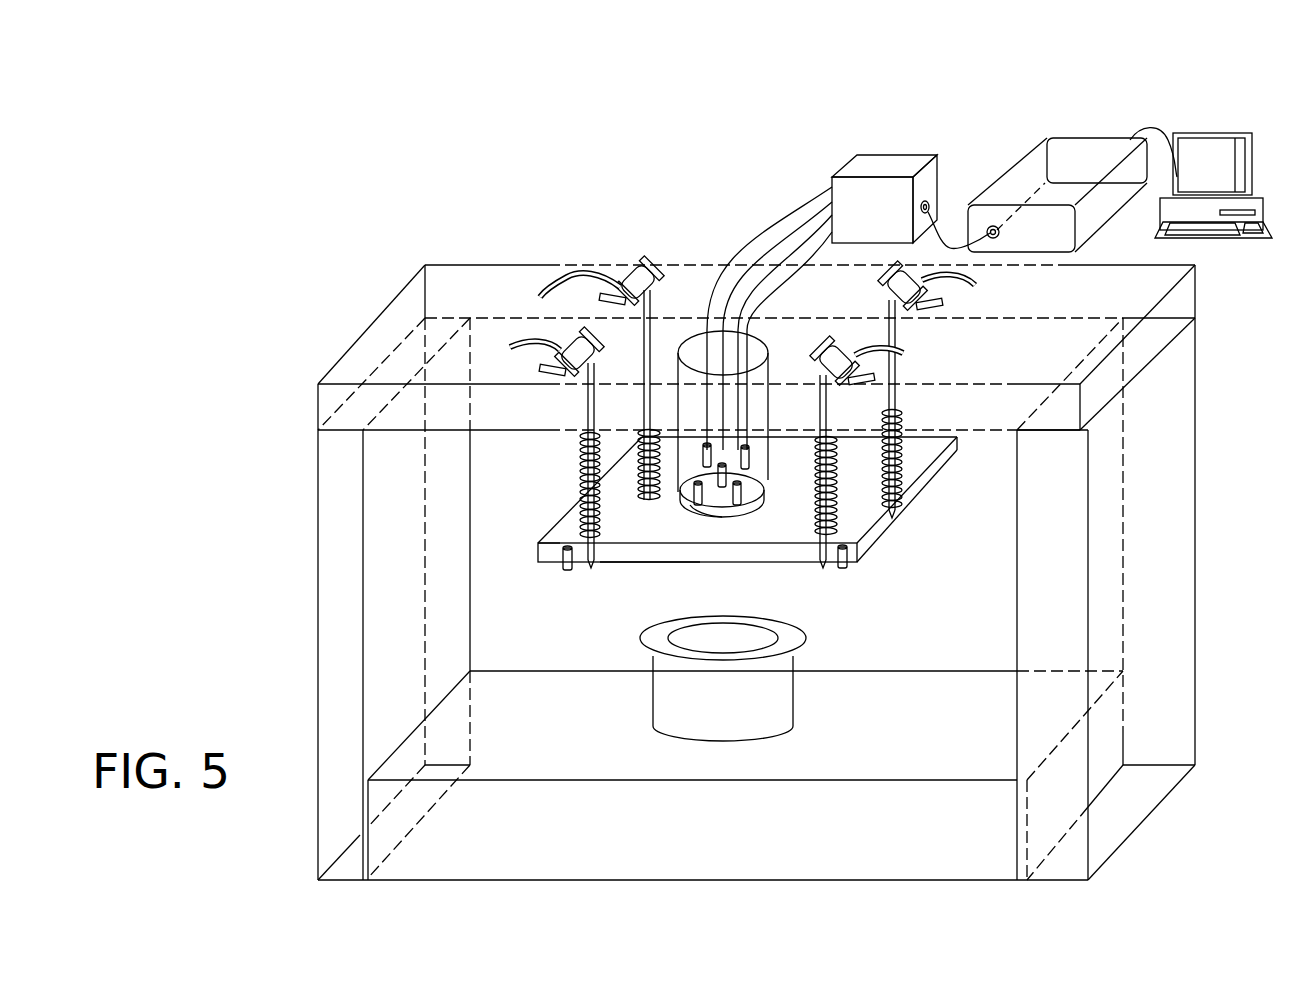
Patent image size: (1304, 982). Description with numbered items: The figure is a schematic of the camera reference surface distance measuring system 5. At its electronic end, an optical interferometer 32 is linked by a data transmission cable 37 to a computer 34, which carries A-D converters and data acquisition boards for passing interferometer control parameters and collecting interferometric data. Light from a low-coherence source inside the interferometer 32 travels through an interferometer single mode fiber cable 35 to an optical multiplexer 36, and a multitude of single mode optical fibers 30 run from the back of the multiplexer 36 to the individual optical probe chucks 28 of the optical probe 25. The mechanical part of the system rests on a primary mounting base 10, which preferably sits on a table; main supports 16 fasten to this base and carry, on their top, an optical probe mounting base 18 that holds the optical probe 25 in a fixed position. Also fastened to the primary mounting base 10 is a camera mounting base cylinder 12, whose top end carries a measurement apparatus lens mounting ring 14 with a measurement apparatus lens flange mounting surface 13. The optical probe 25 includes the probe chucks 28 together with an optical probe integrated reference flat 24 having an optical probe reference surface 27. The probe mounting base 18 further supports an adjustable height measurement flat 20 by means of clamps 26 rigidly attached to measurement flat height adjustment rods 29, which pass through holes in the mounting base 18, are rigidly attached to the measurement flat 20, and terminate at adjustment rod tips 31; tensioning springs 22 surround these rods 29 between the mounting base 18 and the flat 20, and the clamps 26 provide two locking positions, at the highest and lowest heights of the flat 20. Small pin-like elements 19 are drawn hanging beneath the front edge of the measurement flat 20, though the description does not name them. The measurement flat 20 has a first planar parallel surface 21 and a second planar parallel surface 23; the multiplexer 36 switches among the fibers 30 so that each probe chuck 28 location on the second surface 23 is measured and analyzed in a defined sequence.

The camera reference surface distance measuring system 5 is at (413, 192).
The primary mounting base 10 is at (920, 678).
The camera mounting base cylinder 12 is at (785, 715).
The measurement apparatus lens flange mounting surface 13 is at (803, 640).
The measurement apparatus lens mounting ring 14 is at (648, 642).
The main supports 16 is at (318, 600).
The optical probe mounting base 18 is at (500, 268).
The pin 19 is at (563, 570).
The adjustable height measurement flat 20 is at (747, 555).
The first planar parallel surface 21 is at (617, 563).
The tensioning springs 22 is at (580, 470).
The second planar parallel surface 23 is at (538, 543).
The optical probe integrated reference flat 24 is at (683, 505).
The optical probe 25 is at (760, 340).
The clamps 26 is at (488, 428).
The optical probe reference surface 27 is at (745, 525).
The optical probe chucks 28 is at (712, 444).
The measurement flat height adjustment rods 29 is at (650, 417).
The optical fibers 30 is at (758, 200).
The adjustment rod tips 31 is at (591, 568).
The optical interferometer 32 is at (1080, 143).
The computer 34 is at (1228, 133).
The interferometer single mode fiber cable 35 is at (948, 233).
The optical multiplexer 36 is at (870, 157).
The data transmission cable 37 is at (1150, 128).